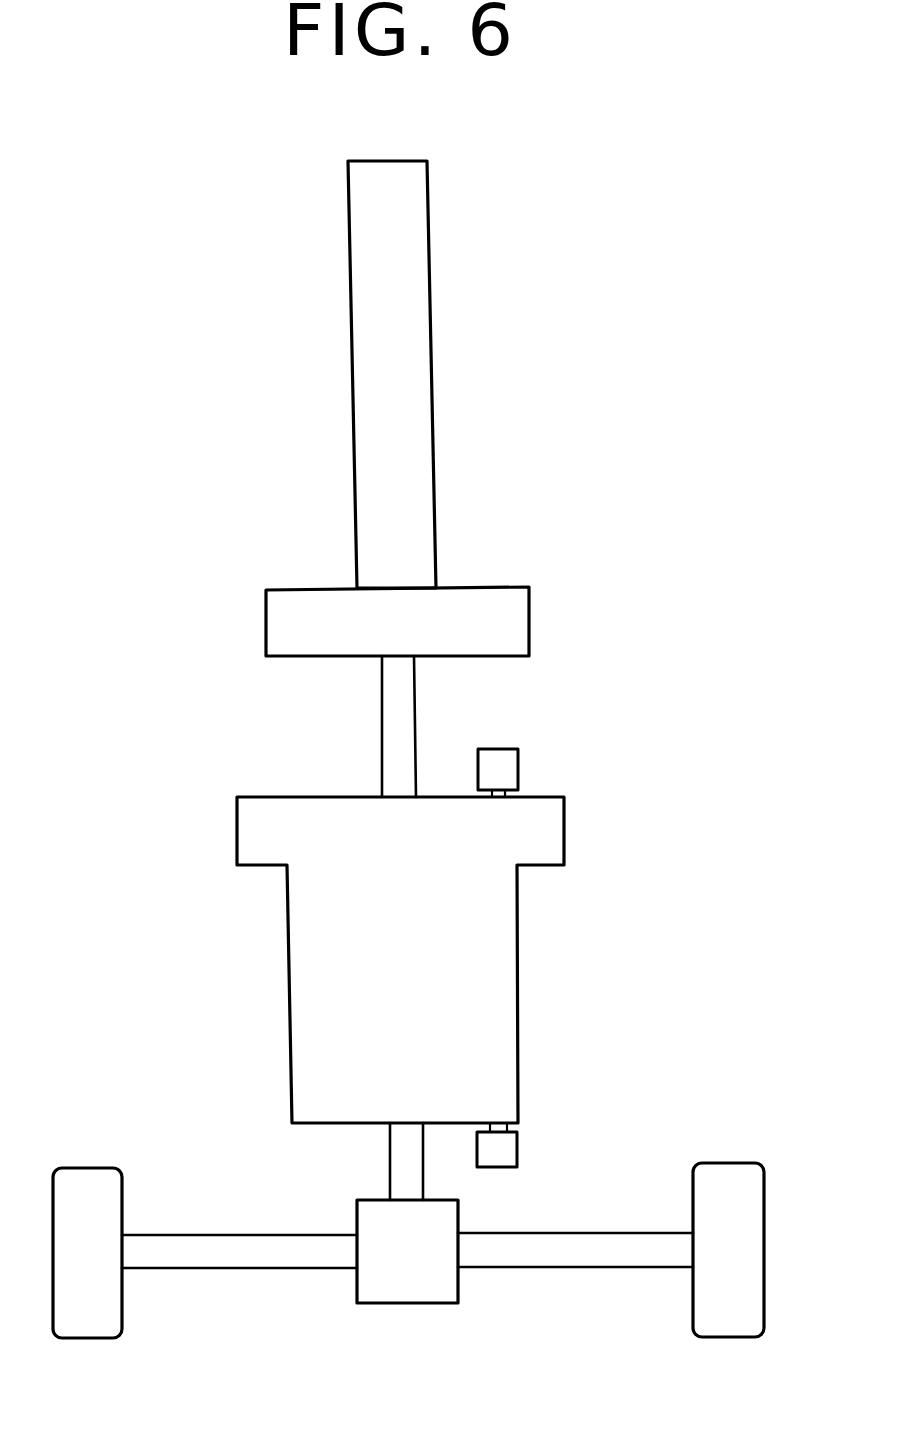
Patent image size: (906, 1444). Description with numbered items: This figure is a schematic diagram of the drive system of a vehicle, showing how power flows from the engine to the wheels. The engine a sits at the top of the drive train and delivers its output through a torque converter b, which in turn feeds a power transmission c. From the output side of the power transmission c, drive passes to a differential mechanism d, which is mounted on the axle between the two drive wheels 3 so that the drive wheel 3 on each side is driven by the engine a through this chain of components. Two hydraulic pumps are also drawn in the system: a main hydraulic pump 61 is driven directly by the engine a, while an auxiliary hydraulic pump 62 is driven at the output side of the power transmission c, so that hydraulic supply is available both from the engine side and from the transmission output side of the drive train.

The engine a is at (420, 418).
The torque converter b is at (500, 618).
The power transmission c is at (485, 1010).
The differential mechanism d is at (440, 1283).
The main hydraulic pump 61 is at (508, 768).
The auxiliary hydraulic pump 62 is at (517, 1142).
The drive wheel 3 is at (102, 1193).